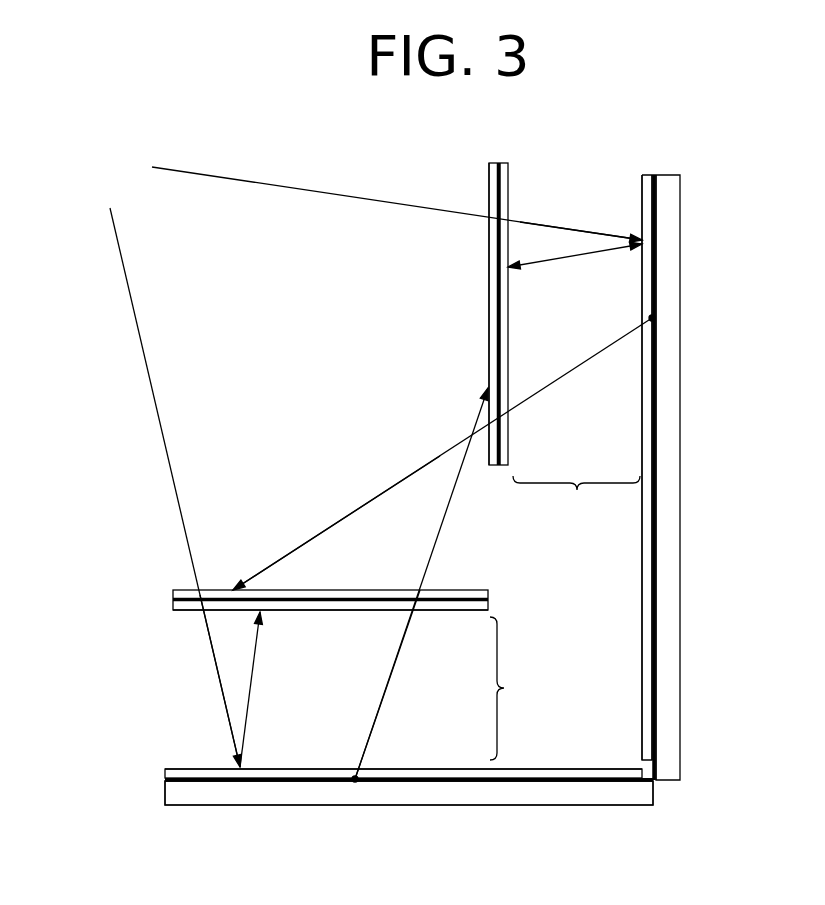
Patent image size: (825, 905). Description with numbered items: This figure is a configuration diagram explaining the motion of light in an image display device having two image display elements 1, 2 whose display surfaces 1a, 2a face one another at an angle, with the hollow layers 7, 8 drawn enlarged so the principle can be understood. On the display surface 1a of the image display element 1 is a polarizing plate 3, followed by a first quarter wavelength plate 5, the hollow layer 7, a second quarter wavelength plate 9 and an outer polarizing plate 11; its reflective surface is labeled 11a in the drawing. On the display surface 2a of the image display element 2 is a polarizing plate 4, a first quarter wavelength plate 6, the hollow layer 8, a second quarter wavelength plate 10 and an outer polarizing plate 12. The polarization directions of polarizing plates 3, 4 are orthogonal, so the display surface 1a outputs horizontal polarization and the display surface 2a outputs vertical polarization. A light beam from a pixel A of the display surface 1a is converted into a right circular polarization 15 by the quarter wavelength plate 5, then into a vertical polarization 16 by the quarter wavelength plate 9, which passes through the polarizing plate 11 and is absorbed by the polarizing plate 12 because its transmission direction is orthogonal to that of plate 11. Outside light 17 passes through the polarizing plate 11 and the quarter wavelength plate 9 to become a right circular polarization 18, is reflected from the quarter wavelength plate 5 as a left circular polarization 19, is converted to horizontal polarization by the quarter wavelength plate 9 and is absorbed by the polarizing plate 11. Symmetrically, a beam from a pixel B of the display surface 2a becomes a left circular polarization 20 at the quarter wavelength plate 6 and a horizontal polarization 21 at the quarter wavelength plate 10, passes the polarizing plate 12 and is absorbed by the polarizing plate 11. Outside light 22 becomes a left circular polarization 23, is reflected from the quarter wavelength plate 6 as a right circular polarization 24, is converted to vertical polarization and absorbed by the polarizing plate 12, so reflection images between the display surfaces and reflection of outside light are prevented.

The image display element 1 is at (402, 797).
The display surface 1a is at (480, 782).
The image display element 2 is at (665, 430).
The display surface 2a is at (655, 487).
The polarizing plate 3 is at (553, 787).
The polarizing plate 4 is at (655, 555).
The first quarter wavelength plate 5 is at (297, 773).
The first quarter wavelength plate 6 is at (650, 378).
The hollow layer 7 is at (509, 688).
The hollow layer 8 is at (564, 347).
The second quarter wavelength plate 9 is at (335, 612).
The second quarter wavelength plate 10 is at (500, 322).
The polarizing plate 11 is at (345, 589).
The reflective surface 11a is at (437, 768).
The polarizing plate 12 is at (490, 286).
The right circular polarization 15 is at (394, 670).
The vertical polarization 16 is at (448, 503).
The outside light 17 is at (155, 400).
The right circular polarization 18 is at (216, 684).
The left circular polarization 19 is at (258, 684).
The left circular polarization 20 is at (577, 384).
The horizontal polarization 21 is at (414, 464).
The outside light 22 is at (238, 192).
The left circular polarization 23 is at (540, 235).
The right circular polarization 24 is at (548, 264).
The pixel A is at (353, 775).
The pixel B is at (648, 318).